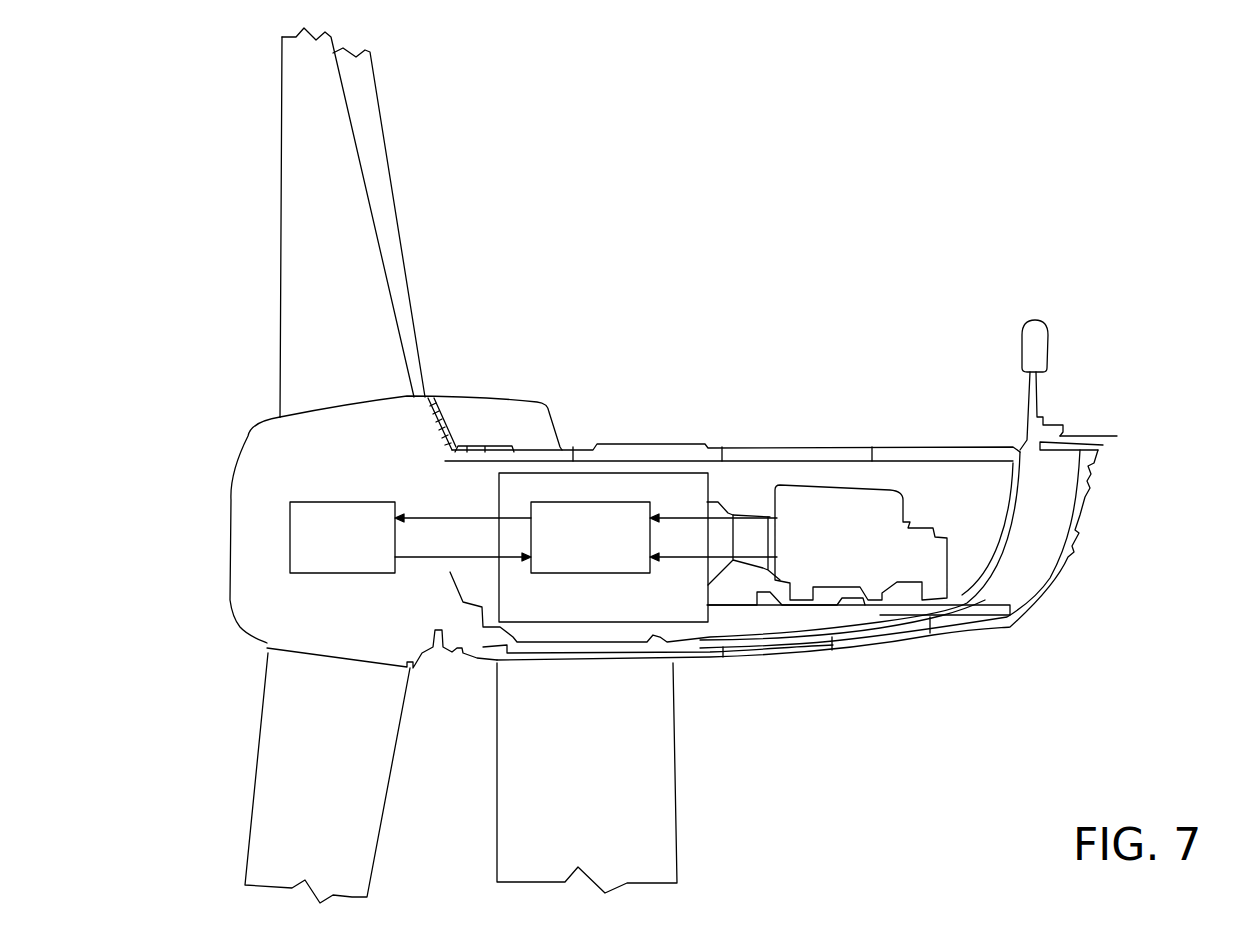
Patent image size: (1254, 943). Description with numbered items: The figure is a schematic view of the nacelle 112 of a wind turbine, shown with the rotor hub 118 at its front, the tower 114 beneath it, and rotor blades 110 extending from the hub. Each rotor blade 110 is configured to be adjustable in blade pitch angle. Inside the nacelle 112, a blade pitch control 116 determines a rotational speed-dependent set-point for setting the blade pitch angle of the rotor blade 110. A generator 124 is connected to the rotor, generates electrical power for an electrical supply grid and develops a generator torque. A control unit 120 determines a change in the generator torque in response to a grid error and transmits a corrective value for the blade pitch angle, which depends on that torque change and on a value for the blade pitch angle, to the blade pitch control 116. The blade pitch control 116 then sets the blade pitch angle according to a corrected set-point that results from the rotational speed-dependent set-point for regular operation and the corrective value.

The rotor blade 110 is at (353, 270).
The nacelle 112 is at (1023, 542).
The tower 114 is at (658, 788).
The blade pitch control 116 is at (303, 557).
The rotor hub 118 is at (303, 455).
The control unit 120 is at (552, 523).
The generator 124 is at (837, 569).